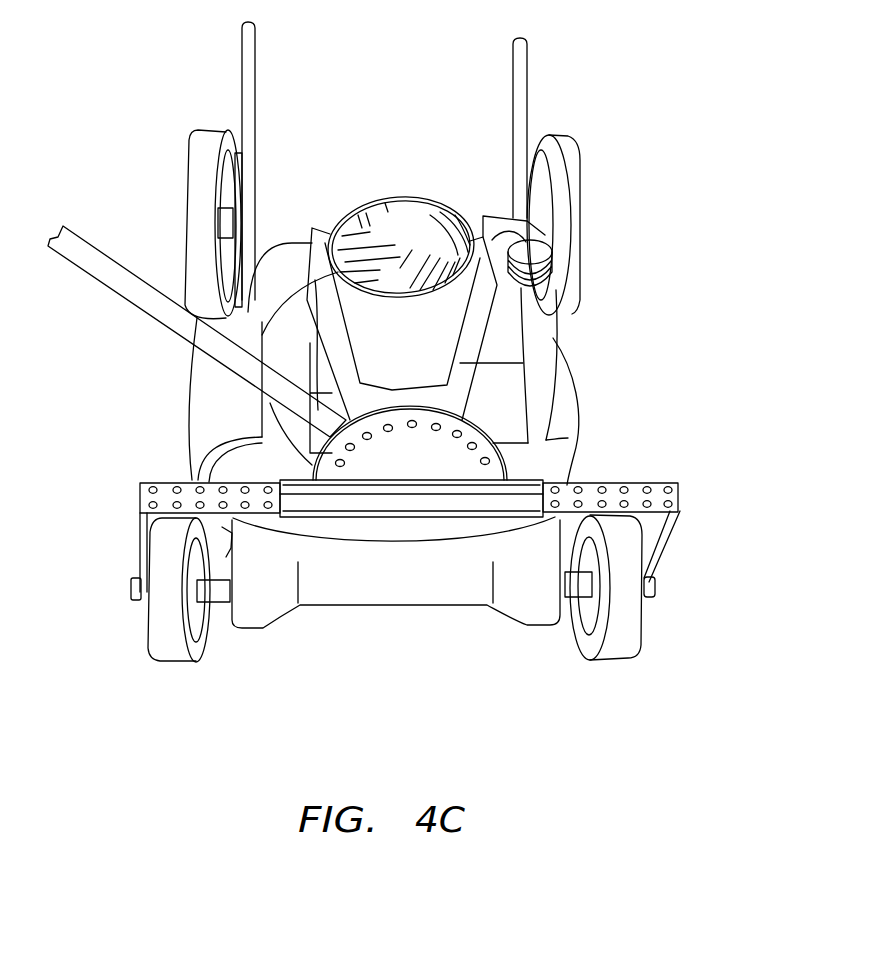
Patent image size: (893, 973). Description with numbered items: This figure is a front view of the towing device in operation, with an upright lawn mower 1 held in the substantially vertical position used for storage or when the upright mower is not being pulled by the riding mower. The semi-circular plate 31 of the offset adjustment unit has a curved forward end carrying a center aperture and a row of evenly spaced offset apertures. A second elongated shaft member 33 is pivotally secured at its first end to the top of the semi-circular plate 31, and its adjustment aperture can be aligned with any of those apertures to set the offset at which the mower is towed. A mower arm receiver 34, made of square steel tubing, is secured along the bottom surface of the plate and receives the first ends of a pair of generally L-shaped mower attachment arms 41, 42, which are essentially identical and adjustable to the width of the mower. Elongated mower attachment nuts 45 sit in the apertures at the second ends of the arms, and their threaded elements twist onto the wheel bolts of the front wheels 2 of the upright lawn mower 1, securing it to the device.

The upright lawn mower 1 is at (467, 318).
The front wheels 2 is at (205, 652).
The semi-circular plate 31 is at (467, 460).
The second elongated shaft member 33 is at (130, 306).
The mower arm receiver 34 is at (367, 503).
The mower attachment arm 41 is at (155, 482).
The mower attachment arm 42 is at (682, 487).
The elongated mower attachment nuts 45 is at (130, 592).